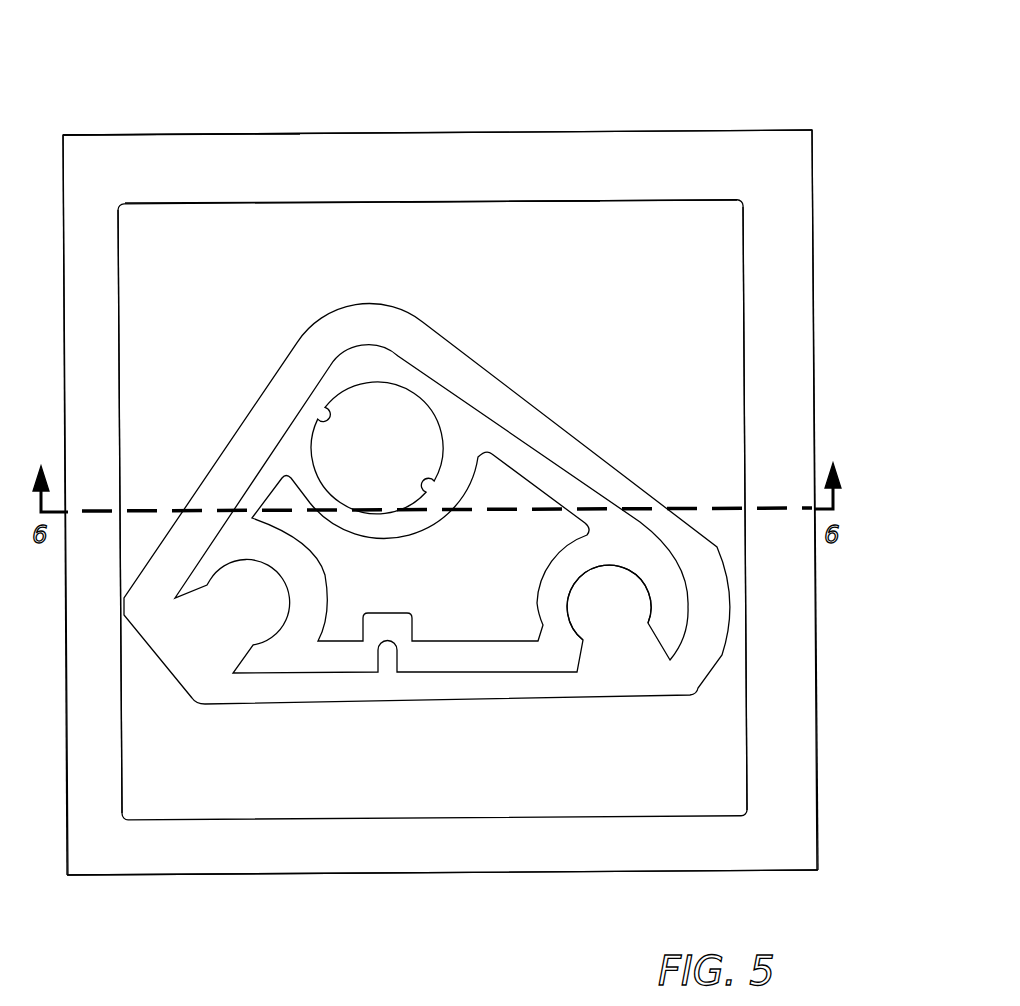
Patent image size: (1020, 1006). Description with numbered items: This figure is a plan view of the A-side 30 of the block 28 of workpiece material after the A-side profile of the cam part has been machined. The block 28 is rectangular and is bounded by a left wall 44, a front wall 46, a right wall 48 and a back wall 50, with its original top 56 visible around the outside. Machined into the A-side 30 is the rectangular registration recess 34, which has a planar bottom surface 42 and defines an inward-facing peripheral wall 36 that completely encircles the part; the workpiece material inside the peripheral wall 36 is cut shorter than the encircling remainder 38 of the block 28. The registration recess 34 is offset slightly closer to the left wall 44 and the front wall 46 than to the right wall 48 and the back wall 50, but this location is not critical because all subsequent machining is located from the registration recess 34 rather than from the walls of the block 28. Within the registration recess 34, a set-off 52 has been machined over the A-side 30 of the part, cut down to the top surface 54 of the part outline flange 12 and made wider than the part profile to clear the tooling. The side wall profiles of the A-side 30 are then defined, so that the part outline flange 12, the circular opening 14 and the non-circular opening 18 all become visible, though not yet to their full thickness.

The block 28 is at (243, 78).
The A-side 30 is at (406, 78).
The part outline flange 12 is at (363, 368).
The circular opening 14 is at (331, 495).
The non-circular opening 18 is at (442, 643).
The registration recess 34 is at (575, 247).
The peripheral wall 36 is at (657, 204).
The encircling remainder 38 is at (512, 162).
The planar bottom surface 42 is at (175, 262).
The left wall 44 is at (60, 393).
The front wall 46 is at (190, 878).
The right wall 48 is at (817, 630).
The back wall 50 is at (277, 133).
The set-off 52 is at (322, 705).
The top surface 54 is at (562, 652).
The top 56 is at (214, 157).